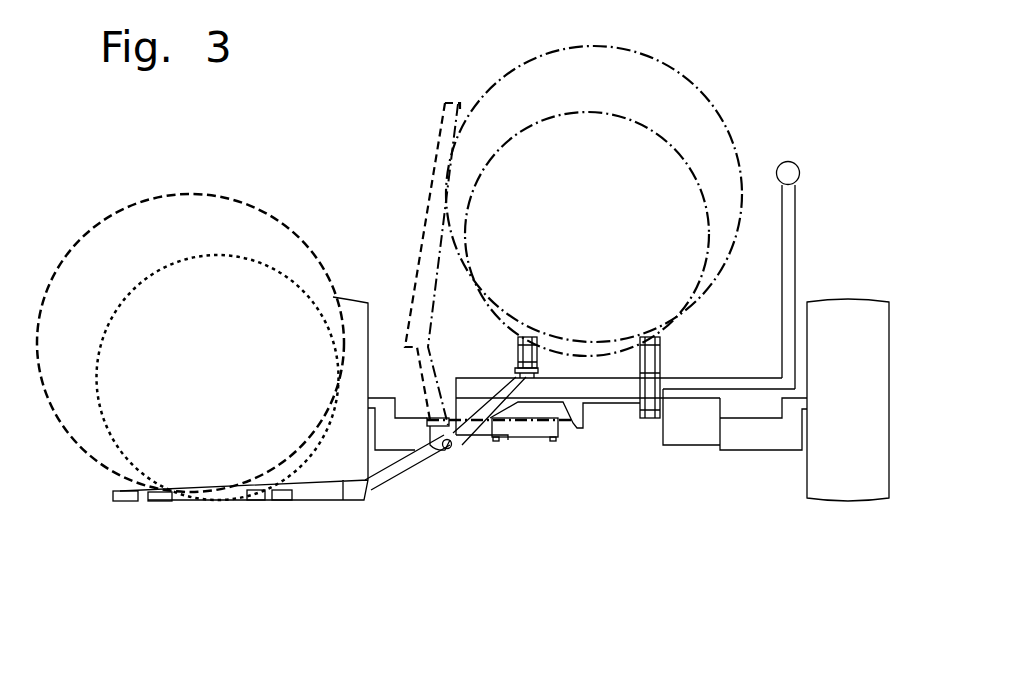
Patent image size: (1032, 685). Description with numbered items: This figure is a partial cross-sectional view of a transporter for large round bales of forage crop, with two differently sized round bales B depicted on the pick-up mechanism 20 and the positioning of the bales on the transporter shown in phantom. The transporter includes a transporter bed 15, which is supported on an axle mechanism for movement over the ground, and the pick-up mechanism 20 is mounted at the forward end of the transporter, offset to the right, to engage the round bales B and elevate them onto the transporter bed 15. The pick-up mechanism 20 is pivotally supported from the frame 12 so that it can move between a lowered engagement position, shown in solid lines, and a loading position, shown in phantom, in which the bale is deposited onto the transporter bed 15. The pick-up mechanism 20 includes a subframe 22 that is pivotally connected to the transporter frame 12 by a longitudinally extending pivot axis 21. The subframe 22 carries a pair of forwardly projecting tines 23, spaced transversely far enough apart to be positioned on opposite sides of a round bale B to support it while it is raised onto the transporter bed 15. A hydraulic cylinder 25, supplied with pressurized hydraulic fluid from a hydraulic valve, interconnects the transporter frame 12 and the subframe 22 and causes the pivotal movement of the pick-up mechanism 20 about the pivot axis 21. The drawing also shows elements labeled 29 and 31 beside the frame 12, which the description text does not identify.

The wheel (bogie) outline B is at (234, 255).
The frame 12 is at (613, 398).
The transporter bed 15 is at (588, 318).
The pick-up mechanism 20 is at (226, 565).
The pivot axis 21 is at (454, 452).
The subframe 22 is at (395, 488).
The tines 23 is at (140, 501).
The hydraulic cylinder 25 is at (530, 430).
The handle knob 29 is at (799, 174).
The cylinder 31 is at (844, 300).